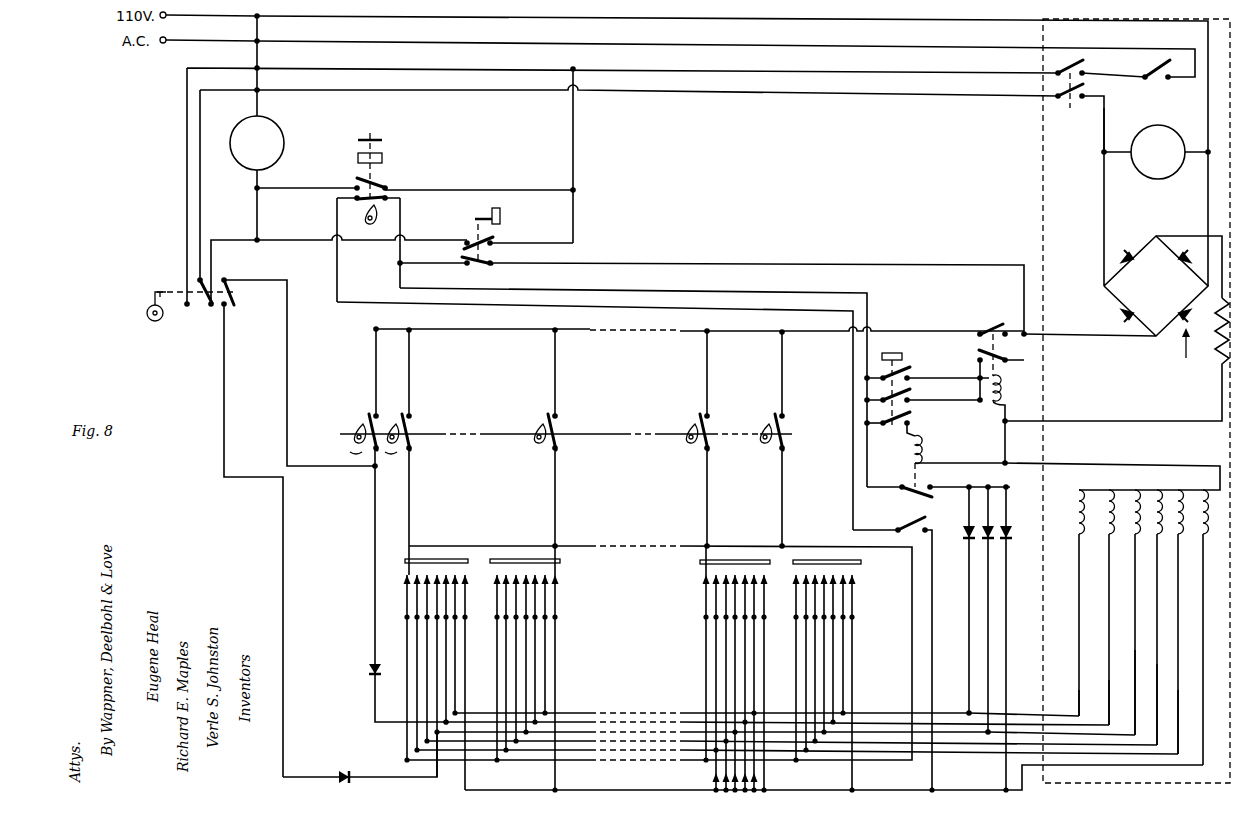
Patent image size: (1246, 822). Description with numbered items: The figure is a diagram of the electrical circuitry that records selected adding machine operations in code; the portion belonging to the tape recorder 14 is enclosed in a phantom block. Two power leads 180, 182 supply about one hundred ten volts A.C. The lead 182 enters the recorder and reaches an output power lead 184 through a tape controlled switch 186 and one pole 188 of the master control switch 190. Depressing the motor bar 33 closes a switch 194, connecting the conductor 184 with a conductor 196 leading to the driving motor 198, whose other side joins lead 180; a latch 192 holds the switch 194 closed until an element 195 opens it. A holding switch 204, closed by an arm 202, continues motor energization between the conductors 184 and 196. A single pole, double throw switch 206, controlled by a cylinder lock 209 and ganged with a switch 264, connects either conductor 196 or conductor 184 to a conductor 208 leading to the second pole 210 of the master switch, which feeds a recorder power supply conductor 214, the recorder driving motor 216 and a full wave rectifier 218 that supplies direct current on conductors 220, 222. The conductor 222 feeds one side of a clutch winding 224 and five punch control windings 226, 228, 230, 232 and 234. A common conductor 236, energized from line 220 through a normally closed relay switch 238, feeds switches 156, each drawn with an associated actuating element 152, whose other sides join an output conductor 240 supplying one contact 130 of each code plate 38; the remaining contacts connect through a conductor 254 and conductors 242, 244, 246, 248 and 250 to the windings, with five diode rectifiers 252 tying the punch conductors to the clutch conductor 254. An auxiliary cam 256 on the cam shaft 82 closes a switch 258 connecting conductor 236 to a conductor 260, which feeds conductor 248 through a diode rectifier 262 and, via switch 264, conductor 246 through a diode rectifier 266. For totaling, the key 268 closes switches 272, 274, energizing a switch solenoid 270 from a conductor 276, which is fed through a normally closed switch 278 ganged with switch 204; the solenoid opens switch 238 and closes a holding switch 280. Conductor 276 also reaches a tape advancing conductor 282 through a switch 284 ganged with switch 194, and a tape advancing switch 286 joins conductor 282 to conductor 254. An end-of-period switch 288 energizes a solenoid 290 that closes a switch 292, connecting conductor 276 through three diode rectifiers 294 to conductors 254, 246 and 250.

The recorder unit 14 is at (1040, 205).
The motor bar 33 is at (374, 139).
The code plate 38 is at (508, 559).
The control unit cam shaft 82 is at (592, 437).
The contacts 130 is at (410, 588).
The thermal responsive switch element 152 is at (395, 426).
The switches 156 is at (412, 424).
The power lead 180 is at (227, 20).
The power lead 182 is at (227, 45).
The output power lead 184 is at (443, 69).
The tape controlled switch 186 is at (1160, 78).
The pole of master control switch 188 is at (1085, 68).
The master control switch 190 is at (1092, 89).
The latch 192 is at (384, 158).
The switch 194 is at (352, 182).
The element 195 is at (362, 220).
The conductor 196 is at (257, 213).
The driving motor 198 is at (283, 124).
The arm 202 is at (500, 213).
The holding switch 204 is at (488, 246).
The single pole, double throw switch 206 is at (196, 310).
The conductor 208 is at (200, 183).
The cylinder lock 209 is at (146, 314).
The second pole of master switch 210 is at (1068, 99).
The recorder power supply conductor 214 is at (1104, 136).
The recorder driving motor 216 is at (1152, 178).
The full wave rectifier 218 is at (1183, 356).
The direct current conductor 220 is at (1062, 337).
The direct current conductor 222 is at (1060, 421).
The clutch winding 224 is at (1216, 528).
The punch control winding 226 is at (1182, 538).
The punch control winding 228 is at (1161, 538).
The punch control winding 230 is at (1139, 538).
The punch control winding 232 is at (1113, 538).
The punch control winding 234 is at (1083, 538).
The common conductor 236 is at (455, 332).
The relay switch 238 is at (992, 326).
The output conductor 240 is at (725, 546).
The conductor 242 is at (1180, 704).
The conductor 244 is at (1158, 678).
The conductor 246 is at (1136, 664).
The conductor 248 is at (1110, 694).
The conductor 250 is at (1081, 706).
The diode rectifiers 252 is at (710, 778).
The conductor 254 is at (872, 790).
The auxiliary cam 256 is at (352, 440).
The switch 258 is at (370, 420).
The conductor 260 is at (375, 558).
The diode rectifier 262 is at (366, 671).
The switch 264 is at (232, 309).
The diode rectifier 266 is at (343, 768).
The key 268 is at (894, 352).
The switch solenoid 270 is at (990, 402).
The switch 272 is at (896, 373).
The switch 274 is at (912, 400).
The conductor 276 is at (870, 302).
The switch 278 is at (478, 266).
The switch 280 is at (978, 352).
The tape advancing conductor 282 is at (348, 306).
The switch 284 is at (355, 200).
The tape advancing switch 286 is at (915, 526).
The end-of-period switch 288 is at (912, 418).
The solenoid 290 is at (926, 445).
The switch 292 is at (918, 490).
The diode rectifiers 294 is at (1010, 527).